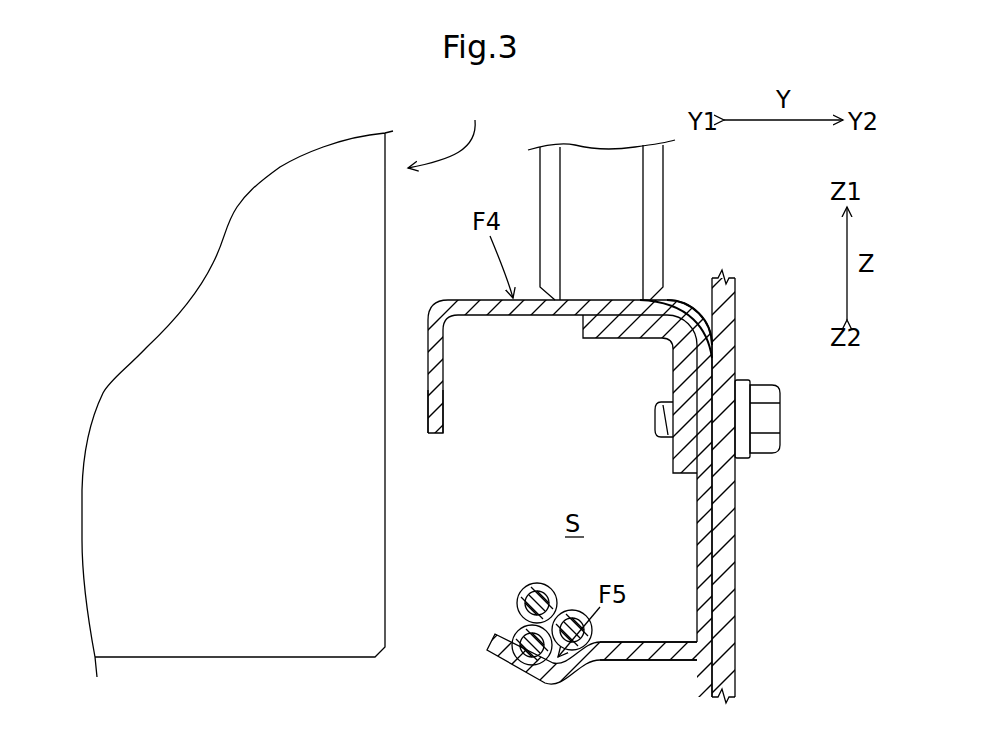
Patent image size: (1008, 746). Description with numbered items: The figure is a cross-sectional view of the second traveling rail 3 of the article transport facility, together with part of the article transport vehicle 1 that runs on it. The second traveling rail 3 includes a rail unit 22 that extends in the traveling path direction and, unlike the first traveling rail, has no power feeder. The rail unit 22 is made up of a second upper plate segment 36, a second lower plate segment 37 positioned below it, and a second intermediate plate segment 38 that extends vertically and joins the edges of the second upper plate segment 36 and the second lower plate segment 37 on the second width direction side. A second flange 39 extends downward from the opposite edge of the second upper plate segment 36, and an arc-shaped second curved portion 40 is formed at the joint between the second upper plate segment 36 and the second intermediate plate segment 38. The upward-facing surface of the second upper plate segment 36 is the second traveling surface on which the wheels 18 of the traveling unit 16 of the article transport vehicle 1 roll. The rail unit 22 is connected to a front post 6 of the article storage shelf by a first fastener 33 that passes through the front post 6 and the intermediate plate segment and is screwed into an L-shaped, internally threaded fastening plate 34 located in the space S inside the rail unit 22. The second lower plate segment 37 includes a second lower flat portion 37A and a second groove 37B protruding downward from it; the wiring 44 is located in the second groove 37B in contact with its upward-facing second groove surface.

The article transport vehicle 1 is at (445, 129).
The second traveling rail 3 is at (652, 675).
The front post 6 is at (730, 333).
The traveling unit 16 is at (382, 224).
The wheel 18 is at (545, 208).
The rail unit 22 is at (605, 672).
The first fastener 33 is at (775, 415).
The fastening plate 34 is at (676, 467).
The second upper plate segment 36 is at (490, 303).
The second lower plate segment 37 is at (504, 490).
The second lower flat portion 37A is at (652, 655).
The second groove 37B is at (503, 667).
The second intermediate plate segment 38 is at (715, 493).
The second flange 39 is at (433, 340).
The second curved portion 40 is at (693, 308).
The wiring 44 is at (515, 641).